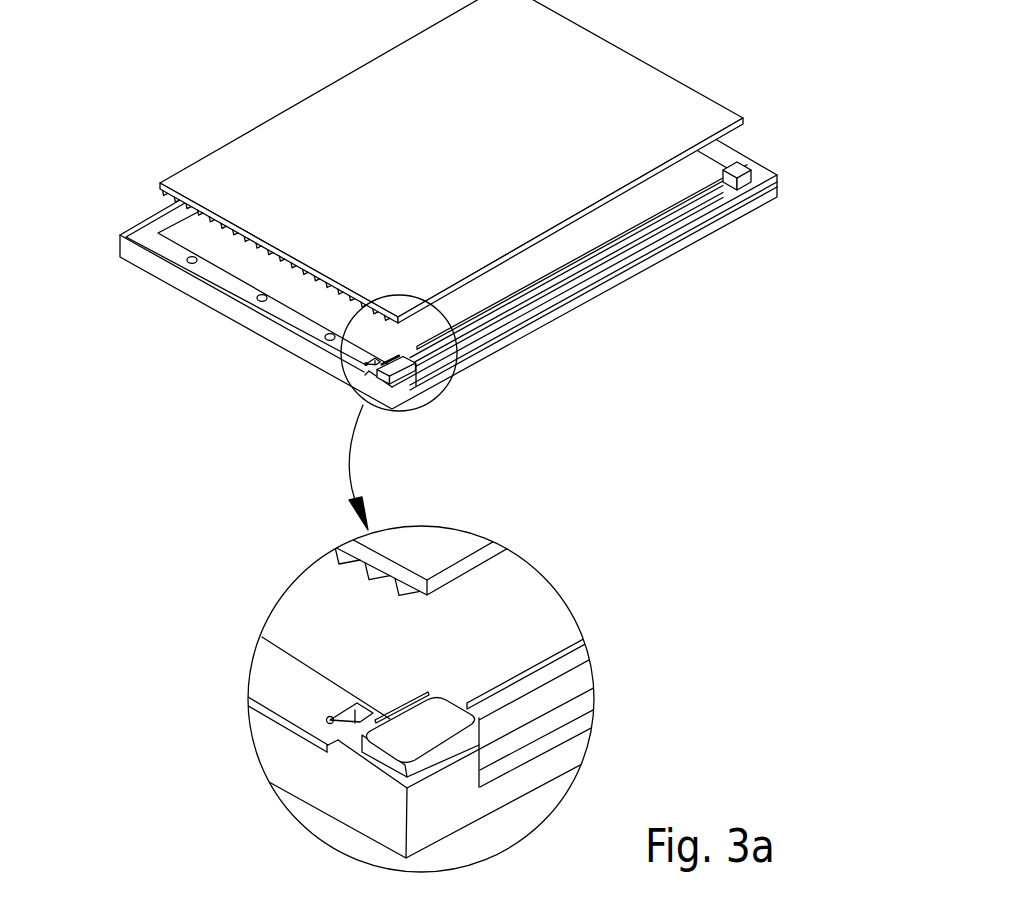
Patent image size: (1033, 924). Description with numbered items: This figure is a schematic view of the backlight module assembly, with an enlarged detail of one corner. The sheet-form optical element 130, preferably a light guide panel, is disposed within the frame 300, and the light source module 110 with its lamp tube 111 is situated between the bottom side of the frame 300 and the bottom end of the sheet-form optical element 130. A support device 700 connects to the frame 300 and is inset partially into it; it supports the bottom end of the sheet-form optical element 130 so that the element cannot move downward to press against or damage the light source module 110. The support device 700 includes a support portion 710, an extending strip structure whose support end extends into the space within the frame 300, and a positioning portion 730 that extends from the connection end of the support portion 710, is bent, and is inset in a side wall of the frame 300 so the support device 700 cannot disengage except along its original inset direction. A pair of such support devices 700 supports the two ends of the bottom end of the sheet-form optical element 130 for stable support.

The sheet-form optical element 130 is at (630, 70).
The frame 300 is at (223, 277).
The light source module 110 is at (697, 203).
The lamp tube 111 is at (570, 657).
The support device 700 is at (330, 722).
The support portion 710 is at (431, 690).
The positioning portion 730 is at (360, 702).